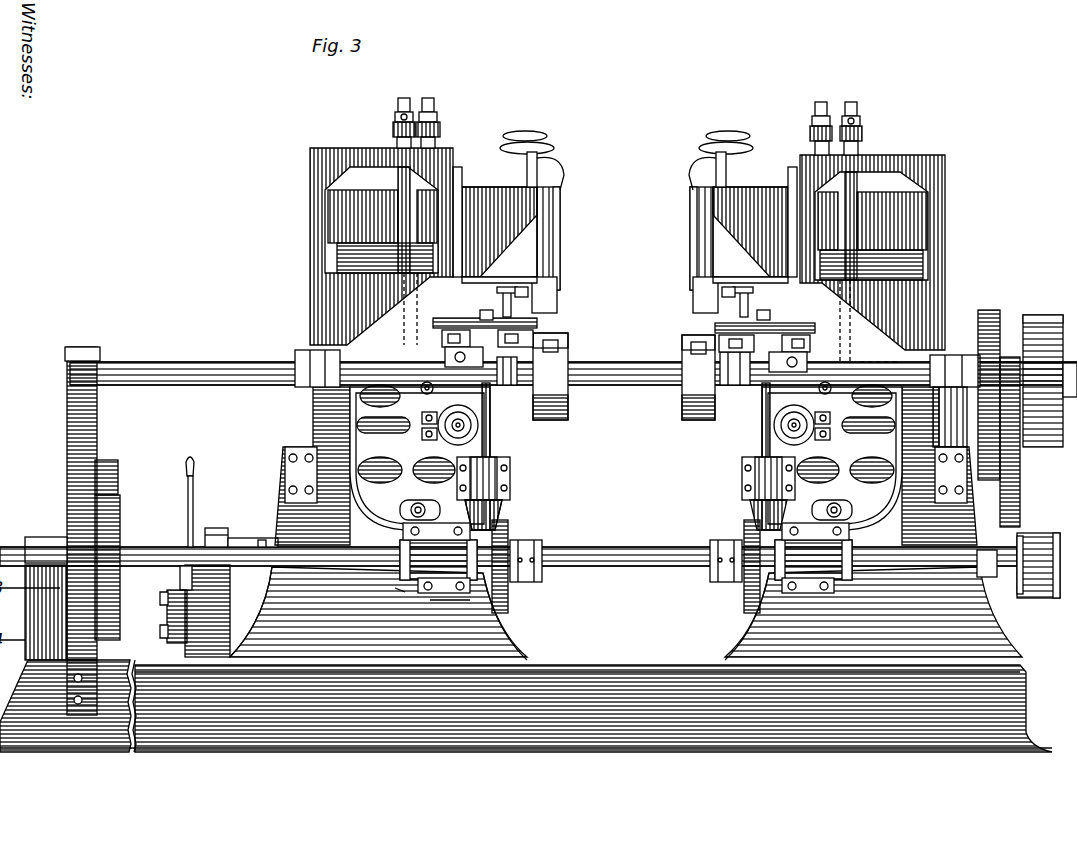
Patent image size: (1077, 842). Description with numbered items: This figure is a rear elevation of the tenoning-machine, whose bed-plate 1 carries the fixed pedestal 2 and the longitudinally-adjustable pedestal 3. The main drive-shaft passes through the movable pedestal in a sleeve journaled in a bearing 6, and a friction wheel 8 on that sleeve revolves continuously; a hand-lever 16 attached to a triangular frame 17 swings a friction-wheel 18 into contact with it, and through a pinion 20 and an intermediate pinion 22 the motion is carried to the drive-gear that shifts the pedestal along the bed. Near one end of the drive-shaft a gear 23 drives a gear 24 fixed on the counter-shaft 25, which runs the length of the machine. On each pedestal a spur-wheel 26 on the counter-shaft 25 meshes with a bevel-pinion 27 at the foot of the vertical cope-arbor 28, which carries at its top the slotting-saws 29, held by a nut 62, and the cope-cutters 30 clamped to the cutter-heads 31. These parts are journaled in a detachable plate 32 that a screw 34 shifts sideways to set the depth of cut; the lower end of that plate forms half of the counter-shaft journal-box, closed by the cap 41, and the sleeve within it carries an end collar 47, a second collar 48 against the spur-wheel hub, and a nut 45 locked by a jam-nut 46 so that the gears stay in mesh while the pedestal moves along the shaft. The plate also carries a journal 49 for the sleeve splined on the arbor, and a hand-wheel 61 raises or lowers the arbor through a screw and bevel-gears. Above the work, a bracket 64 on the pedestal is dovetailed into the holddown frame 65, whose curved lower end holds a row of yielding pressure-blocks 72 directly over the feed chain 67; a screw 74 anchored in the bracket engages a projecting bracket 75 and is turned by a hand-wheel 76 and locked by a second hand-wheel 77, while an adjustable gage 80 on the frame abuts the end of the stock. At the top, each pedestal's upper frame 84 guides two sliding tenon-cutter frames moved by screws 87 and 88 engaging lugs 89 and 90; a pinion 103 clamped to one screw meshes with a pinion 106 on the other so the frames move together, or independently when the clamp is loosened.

The bed-plate 1 is at (612, 753).
The fixed pedestal 2 is at (873, 522).
The longitudinally-adjustable pedestal 3 is at (378, 522).
The bearing 6 is at (262, 539).
The friction wheel 8 is at (216, 528).
The hand-lever 16 is at (190, 455).
The triangular frame 17 is at (190, 580).
The friction-wheel 18 is at (250, 620).
The pinion 20 is at (168, 596).
The intermediate pinion 22 is at (168, 630).
The gear 23 is at (112, 462).
The gear 24 is at (118, 512).
The counter-shaft 25 is at (155, 548).
The spur-wheel 26 is at (506, 615).
The bevel-pinion 27 is at (502, 502).
The cope-arbor 28 is at (492, 447).
The slotting-saws 29 is at (870, 328).
The cope-cutters 30 is at (543, 335).
The cutter-heads 31 is at (442, 340).
The detachable plate 32 is at (626, 458).
The screw 34 is at (626, 439).
The cap 41 is at (626, 558).
The nut 45 is at (520, 582).
The jam-nut 46 is at (542, 578).
The end collar 47 is at (396, 590).
The collar 48 is at (476, 608).
The journal 49 is at (512, 483).
The hand-wheel 61 is at (446, 438).
The nut 62 is at (484, 318).
The bracket 64 is at (625, 222).
The frame 65 is at (562, 236).
The chain 67 is at (598, 406).
The pressure-blocks 72 is at (556, 312).
The screw 74 is at (526, 176).
The projecting bracket 75 is at (562, 172).
The hand-wheel 76 is at (556, 146).
The second hand-wheel 77 is at (536, 118).
The adjustable gage 80 is at (508, 316).
The upper frame 84 is at (318, 156).
The screw 87 is at (434, 104).
The screw 88 is at (398, 103).
The lug 89 is at (418, 190).
The lug 90 is at (862, 364).
The pinion 103 is at (440, 131).
The pinion 106 is at (393, 129).